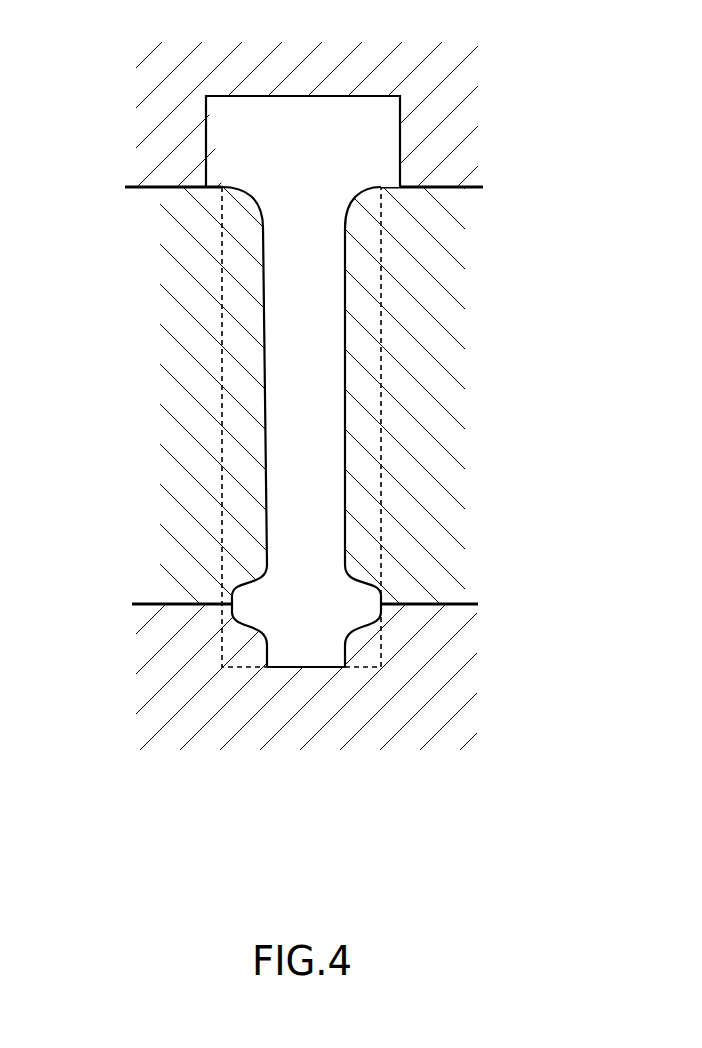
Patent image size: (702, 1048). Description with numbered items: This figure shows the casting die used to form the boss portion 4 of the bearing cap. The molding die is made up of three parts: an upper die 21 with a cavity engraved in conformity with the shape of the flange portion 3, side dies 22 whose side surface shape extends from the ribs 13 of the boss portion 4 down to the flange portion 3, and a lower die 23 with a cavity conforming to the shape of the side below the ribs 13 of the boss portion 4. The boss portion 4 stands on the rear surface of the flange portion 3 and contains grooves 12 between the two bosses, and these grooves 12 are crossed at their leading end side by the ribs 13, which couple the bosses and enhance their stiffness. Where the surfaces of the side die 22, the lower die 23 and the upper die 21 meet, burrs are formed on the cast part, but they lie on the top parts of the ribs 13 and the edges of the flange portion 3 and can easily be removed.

The flange portion 3 is at (366, 98).
The boss portion 4 is at (303, 669).
The groove 12 is at (263, 385).
The rib 13 is at (235, 600).
The upper die 21 is at (430, 142).
The side die 22 is at (173, 311).
The lower die 23 is at (440, 673).